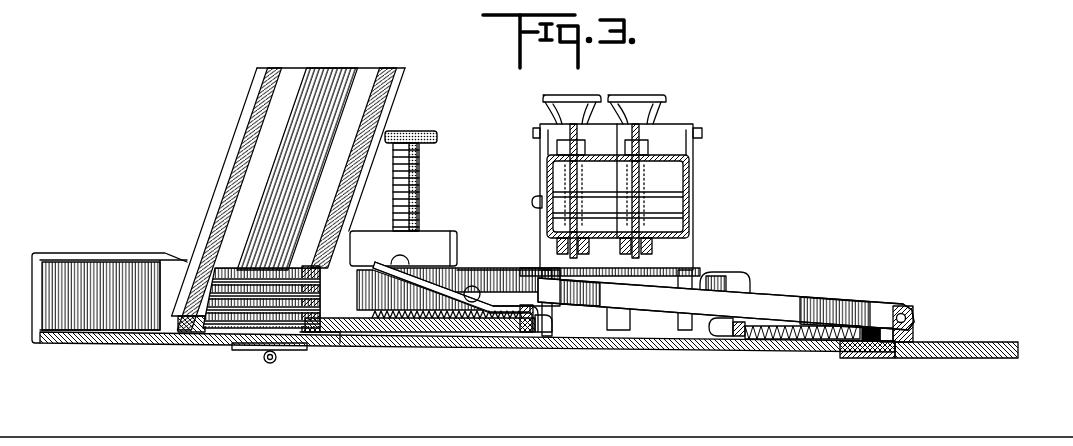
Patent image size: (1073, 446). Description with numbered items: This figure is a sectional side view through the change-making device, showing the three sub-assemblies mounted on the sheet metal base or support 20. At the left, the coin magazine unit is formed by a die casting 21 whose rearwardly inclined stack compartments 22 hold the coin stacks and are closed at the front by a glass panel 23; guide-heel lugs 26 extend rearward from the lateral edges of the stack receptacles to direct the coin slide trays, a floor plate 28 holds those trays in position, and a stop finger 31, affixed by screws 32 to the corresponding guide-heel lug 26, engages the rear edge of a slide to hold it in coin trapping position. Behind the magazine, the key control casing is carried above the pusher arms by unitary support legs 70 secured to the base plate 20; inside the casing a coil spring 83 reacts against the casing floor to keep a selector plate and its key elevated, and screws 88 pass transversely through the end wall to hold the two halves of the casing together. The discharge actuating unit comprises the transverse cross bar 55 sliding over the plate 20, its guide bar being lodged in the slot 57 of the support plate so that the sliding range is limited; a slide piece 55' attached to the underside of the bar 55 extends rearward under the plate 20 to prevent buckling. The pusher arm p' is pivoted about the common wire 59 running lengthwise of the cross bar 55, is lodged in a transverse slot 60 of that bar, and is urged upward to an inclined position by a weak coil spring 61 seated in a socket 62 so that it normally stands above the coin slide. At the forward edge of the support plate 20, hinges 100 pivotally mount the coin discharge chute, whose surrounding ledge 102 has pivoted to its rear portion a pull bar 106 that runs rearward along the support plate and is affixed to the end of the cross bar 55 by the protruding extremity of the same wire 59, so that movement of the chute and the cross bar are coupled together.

The base 20 is at (484, 343).
The die casting 21 is at (347, 242).
The stack compartments 22 is at (292, 173).
The glass panel 23 is at (270, 133).
The guide-heel lugs 26 is at (427, 302).
The floor plate 28 is at (295, 340).
The stop finger 31 is at (548, 320).
The screws 32 is at (474, 288).
The cross bar 55 is at (889, 328).
The slide piece 55' is at (958, 364).
The slot 57 is at (815, 344).
The wire 59 is at (907, 316).
The transverse slots 60 is at (915, 326).
The coil springs 61 is at (880, 326).
The sockets 62 is at (878, 348).
The support legs 70 is at (690, 254).
The coil spring 83 is at (640, 185).
The screws 88 is at (533, 201).
The hinges 100 is at (262, 354).
The ledge 102 is at (83, 273).
The pull bar 106 is at (722, 276).
The pusher arm p' is at (726, 294).